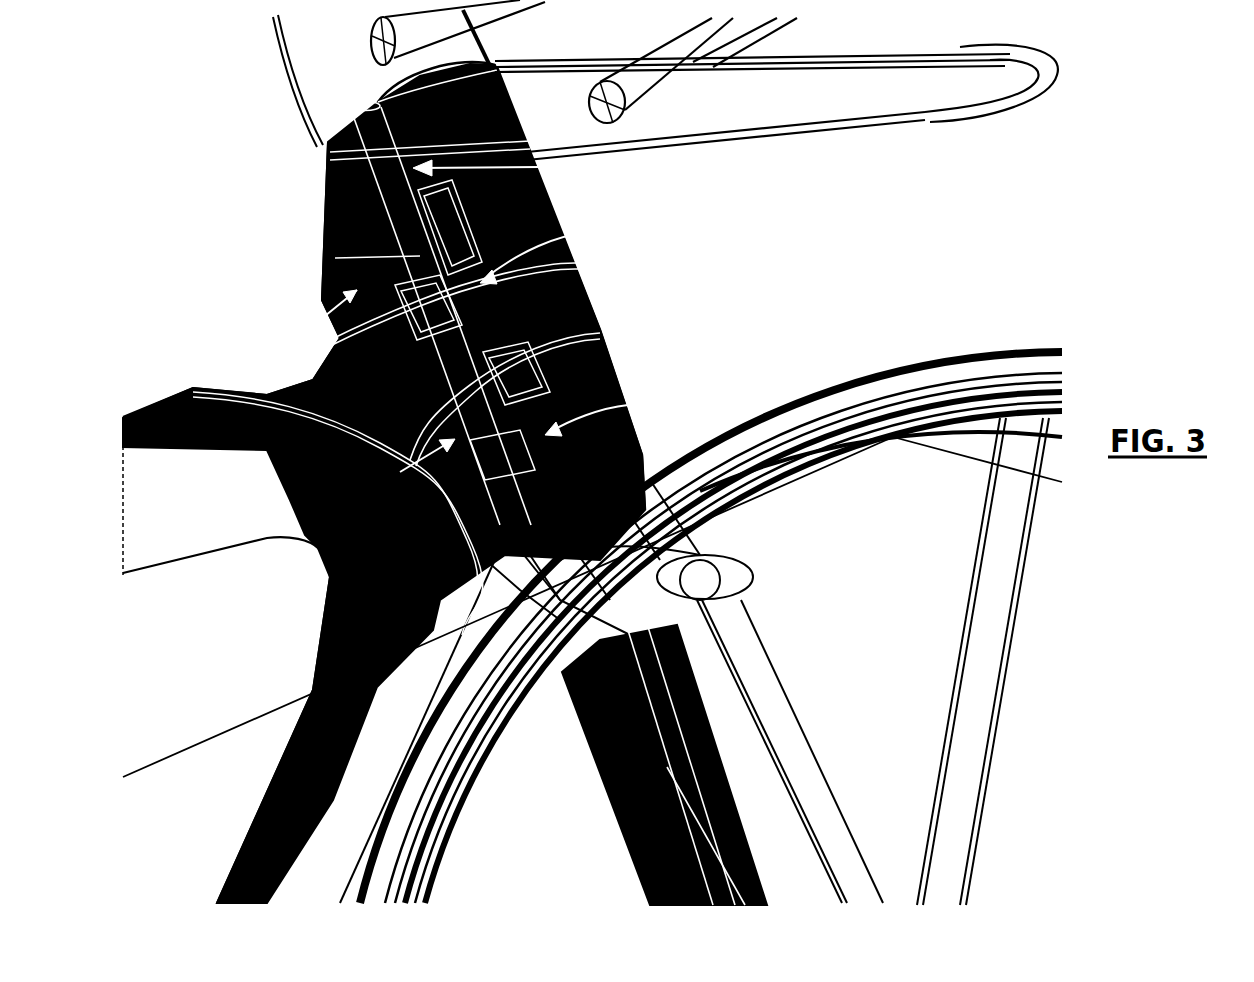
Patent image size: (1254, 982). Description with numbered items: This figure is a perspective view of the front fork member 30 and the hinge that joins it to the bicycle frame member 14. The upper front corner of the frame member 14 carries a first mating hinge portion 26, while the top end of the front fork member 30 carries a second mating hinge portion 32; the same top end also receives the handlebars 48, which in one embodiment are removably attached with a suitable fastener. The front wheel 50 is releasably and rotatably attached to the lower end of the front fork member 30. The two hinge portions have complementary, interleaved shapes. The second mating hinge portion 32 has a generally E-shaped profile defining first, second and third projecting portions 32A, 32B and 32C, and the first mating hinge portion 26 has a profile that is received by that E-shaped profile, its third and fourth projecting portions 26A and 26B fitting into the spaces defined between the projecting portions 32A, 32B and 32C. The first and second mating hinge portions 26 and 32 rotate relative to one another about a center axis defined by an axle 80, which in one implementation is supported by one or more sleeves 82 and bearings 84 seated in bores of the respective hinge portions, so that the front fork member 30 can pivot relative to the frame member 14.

The frame member 14 is at (162, 400).
The first mating hinge portion 26 is at (340, 211).
The third projecting portion 26A is at (320, 320).
The fourth projecting portion 26B is at (400, 472).
The front fork member 30 is at (757, 640).
The second mating hinge portion 32 is at (563, 313).
The first projecting portion 32A is at (540, 167).
The second projecting portion 32B is at (566, 233).
The third projecting portion 32C is at (630, 405).
The handlebars 48 is at (700, 138).
The front wheel 50 is at (810, 387).
The axle 80 is at (570, 264).
The sleeve 82 is at (600, 333).
The bearing 84 is at (335, 258).